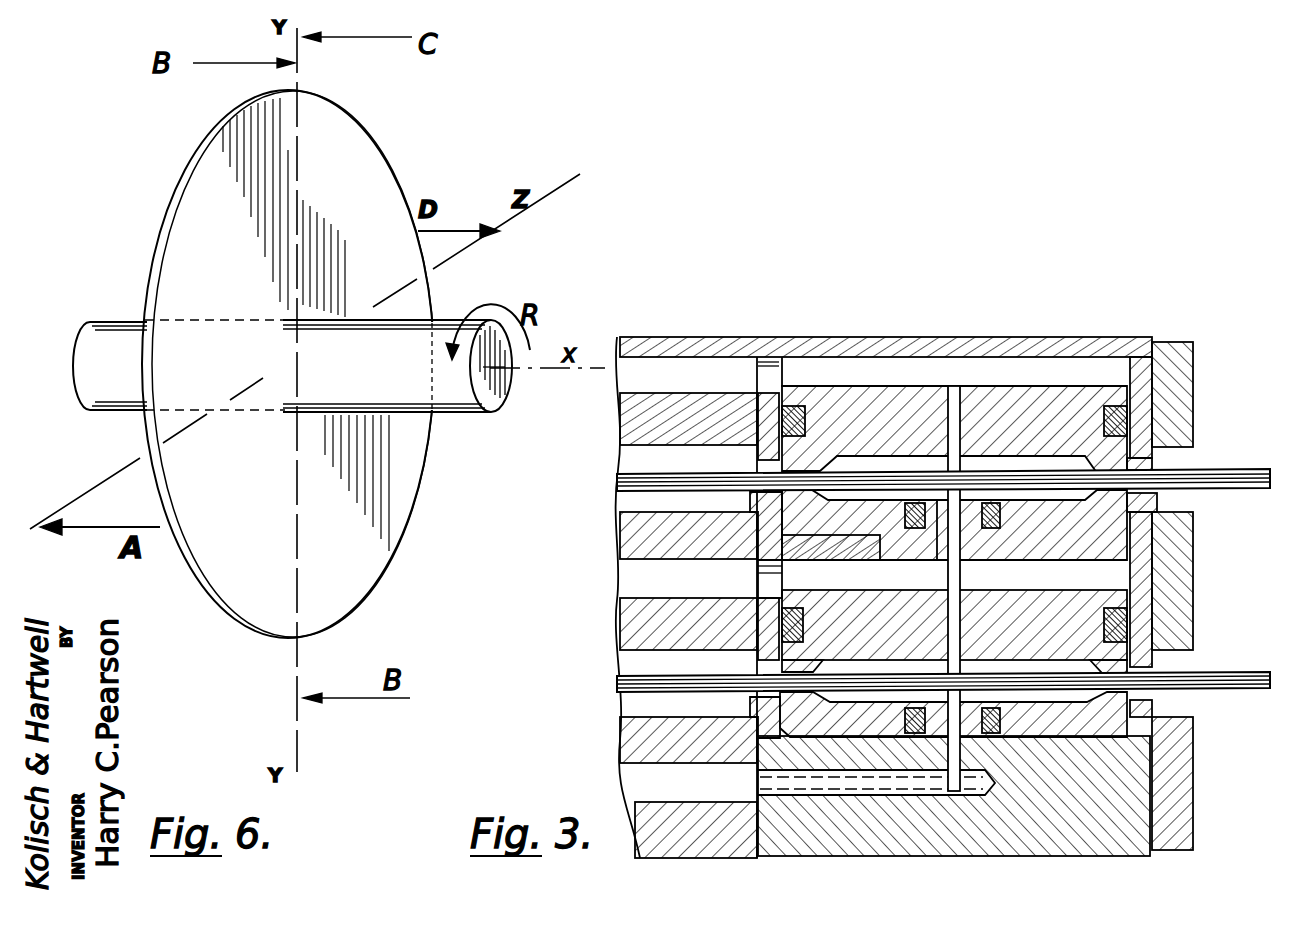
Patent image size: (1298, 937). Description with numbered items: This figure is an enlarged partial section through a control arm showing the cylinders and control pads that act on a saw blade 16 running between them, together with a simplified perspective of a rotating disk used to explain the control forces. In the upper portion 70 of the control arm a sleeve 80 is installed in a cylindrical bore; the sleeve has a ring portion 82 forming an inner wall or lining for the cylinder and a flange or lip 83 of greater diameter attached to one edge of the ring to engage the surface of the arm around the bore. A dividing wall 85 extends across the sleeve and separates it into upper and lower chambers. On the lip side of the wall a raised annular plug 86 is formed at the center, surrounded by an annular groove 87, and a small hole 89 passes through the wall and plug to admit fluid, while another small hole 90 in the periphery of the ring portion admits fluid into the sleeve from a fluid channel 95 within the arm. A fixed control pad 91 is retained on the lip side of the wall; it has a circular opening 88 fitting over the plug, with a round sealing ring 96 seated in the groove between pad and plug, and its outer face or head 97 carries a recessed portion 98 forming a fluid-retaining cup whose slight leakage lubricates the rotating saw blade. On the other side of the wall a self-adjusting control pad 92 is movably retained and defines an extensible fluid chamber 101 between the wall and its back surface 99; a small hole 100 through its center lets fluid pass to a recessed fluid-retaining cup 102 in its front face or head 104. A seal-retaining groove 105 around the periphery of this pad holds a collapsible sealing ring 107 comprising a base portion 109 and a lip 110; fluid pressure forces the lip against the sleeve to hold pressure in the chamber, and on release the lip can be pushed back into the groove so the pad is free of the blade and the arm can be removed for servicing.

The bar 16 is at (1262, 470).
The upper portion 70 is at (700, 348).
The sleeve 80 is at (770, 515).
The ring portion 82 is at (1150, 547).
The flange or lip 83 is at (1160, 505).
The dividing wall 85 is at (1073, 547).
The raised annular plug 86 is at (975, 523).
The annular groove 87 is at (1003, 512).
The circular opening 88 is at (915, 512).
The small hole 89 is at (956, 545).
The small hole 90 is at (763, 582).
The fixed control pad 91 is at (772, 482).
The self-adjusting control pad 92 is at (790, 590).
The fluid channel 95 is at (640, 583).
The round sealing ring 96 is at (937, 520).
The outer face or head 97 is at (1140, 472).
The recessed portion 98 is at (1057, 495).
The back surface 99 is at (1140, 600).
The small hole 100 is at (957, 655).
The extensible fluid chamber 101 is at (1130, 568).
The recessed fluid-retaining cup 102 is at (1108, 672).
The front face or head 104 is at (760, 696).
The seal-retaining groove 105 is at (782, 668).
The collapsible sealing ring 107 is at (845, 598).
The base portion 109 is at (852, 590).
The lip 110 is at (758, 650).